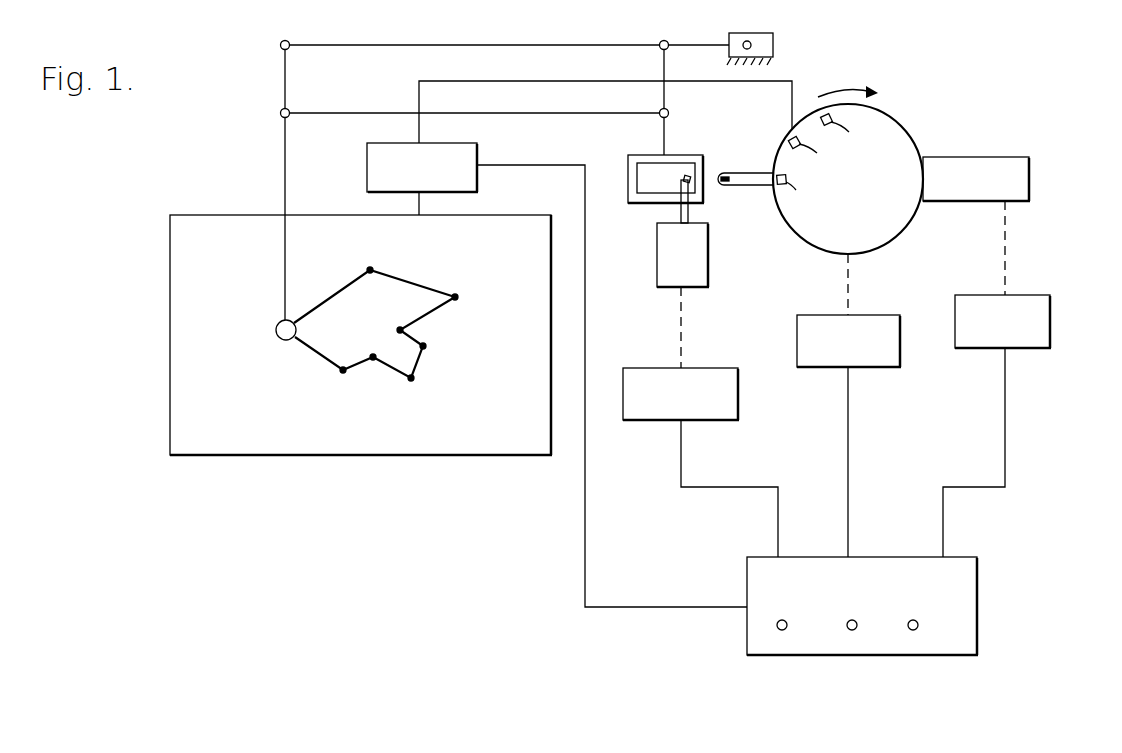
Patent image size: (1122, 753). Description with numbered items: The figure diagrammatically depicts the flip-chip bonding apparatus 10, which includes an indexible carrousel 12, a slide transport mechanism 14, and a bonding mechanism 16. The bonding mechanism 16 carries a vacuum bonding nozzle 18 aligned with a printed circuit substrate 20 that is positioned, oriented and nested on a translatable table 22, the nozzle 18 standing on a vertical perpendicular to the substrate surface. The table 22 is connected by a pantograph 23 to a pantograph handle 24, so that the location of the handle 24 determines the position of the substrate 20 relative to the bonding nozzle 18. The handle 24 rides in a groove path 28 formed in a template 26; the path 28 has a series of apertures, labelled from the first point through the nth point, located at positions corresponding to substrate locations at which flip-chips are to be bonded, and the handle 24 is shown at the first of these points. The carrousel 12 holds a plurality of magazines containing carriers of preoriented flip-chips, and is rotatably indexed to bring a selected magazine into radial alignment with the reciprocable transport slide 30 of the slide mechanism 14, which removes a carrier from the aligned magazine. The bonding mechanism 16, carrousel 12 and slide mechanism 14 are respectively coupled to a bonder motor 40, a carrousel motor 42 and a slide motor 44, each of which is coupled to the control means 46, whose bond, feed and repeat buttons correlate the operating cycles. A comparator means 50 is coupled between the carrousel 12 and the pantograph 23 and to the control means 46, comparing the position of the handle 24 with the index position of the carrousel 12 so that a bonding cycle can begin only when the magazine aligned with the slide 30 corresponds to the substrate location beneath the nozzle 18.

The apparatus 10 is at (392, 509).
The indexible carrousel 12 is at (901, 125).
The slide transport mechanism 14 is at (1022, 199).
The bonding mechanism 16 is at (709, 270).
The vacuum bonding nozzle 18 is at (690, 179).
The printed circuit substrate 20 is at (648, 184).
The translatable table 22 is at (690, 156).
The pantograph 23 is at (440, 35).
The pantograph handle 24 is at (282, 338).
The template 26 is at (230, 440).
The groove path 28 is at (435, 312).
The reciprocable transport slide 30 is at (750, 178).
The bonder motor 40 is at (732, 367).
The carrousel motor 42 is at (894, 314).
The slide motor 44 is at (1050, 295).
The control means 46 is at (978, 558).
The comparator means 50 is at (476, 143).